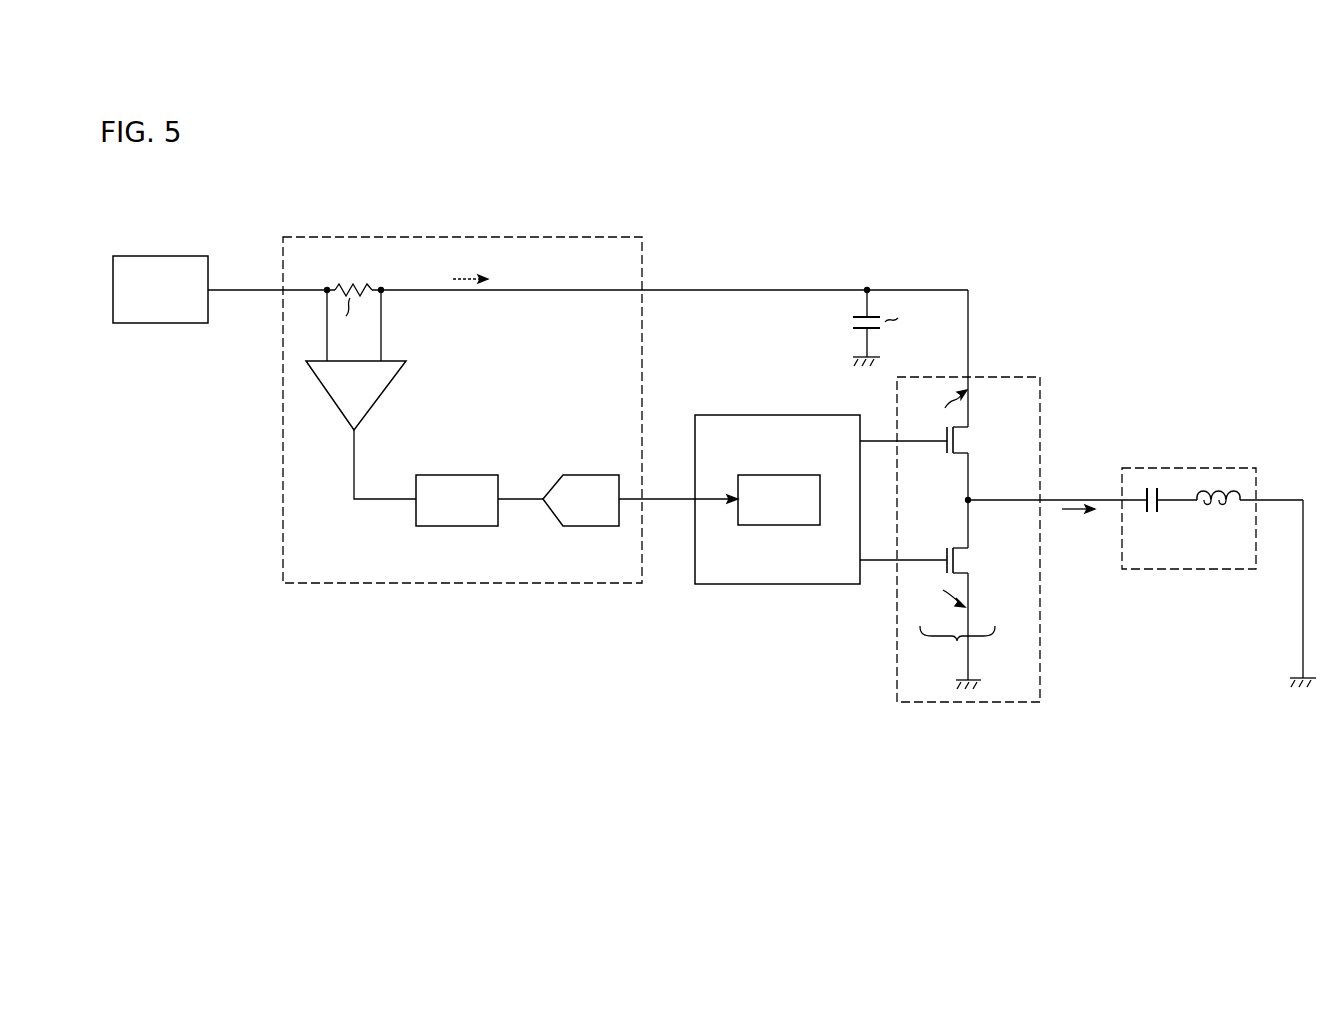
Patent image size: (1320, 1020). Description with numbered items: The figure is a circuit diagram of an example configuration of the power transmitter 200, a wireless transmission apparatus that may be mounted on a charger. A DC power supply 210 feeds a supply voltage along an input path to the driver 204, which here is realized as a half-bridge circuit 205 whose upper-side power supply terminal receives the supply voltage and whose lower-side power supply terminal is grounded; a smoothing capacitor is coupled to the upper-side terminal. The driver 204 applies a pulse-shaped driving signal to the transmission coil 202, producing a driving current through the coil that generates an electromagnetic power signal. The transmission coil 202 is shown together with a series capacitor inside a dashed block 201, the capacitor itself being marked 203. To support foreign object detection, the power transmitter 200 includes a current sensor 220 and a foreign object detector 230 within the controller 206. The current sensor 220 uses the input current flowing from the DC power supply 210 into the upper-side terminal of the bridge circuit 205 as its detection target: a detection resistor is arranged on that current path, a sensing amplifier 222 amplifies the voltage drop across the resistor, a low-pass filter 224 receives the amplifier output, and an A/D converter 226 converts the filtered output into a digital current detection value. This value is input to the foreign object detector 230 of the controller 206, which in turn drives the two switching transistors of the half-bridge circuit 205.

The power transmitter 200 is at (735, 764).
The resonance circuit / coil unit 201 is at (1155, 468).
The transmission coil 202 is at (1222, 505).
The resonance capacitor 203 is at (1150, 515).
The driver 204 is at (990, 375).
The half-bridge circuit 205 is at (957, 648).
The controller 206 is at (760, 415).
The DC power supply 210 is at (152, 256).
The current sensor 220 is at (427, 585).
The sensing amplifier 222 is at (328, 398).
The low-pass filter 224 is at (448, 475).
The A/D converter 226 is at (583, 475).
The foreign object detector 230 is at (779, 525).